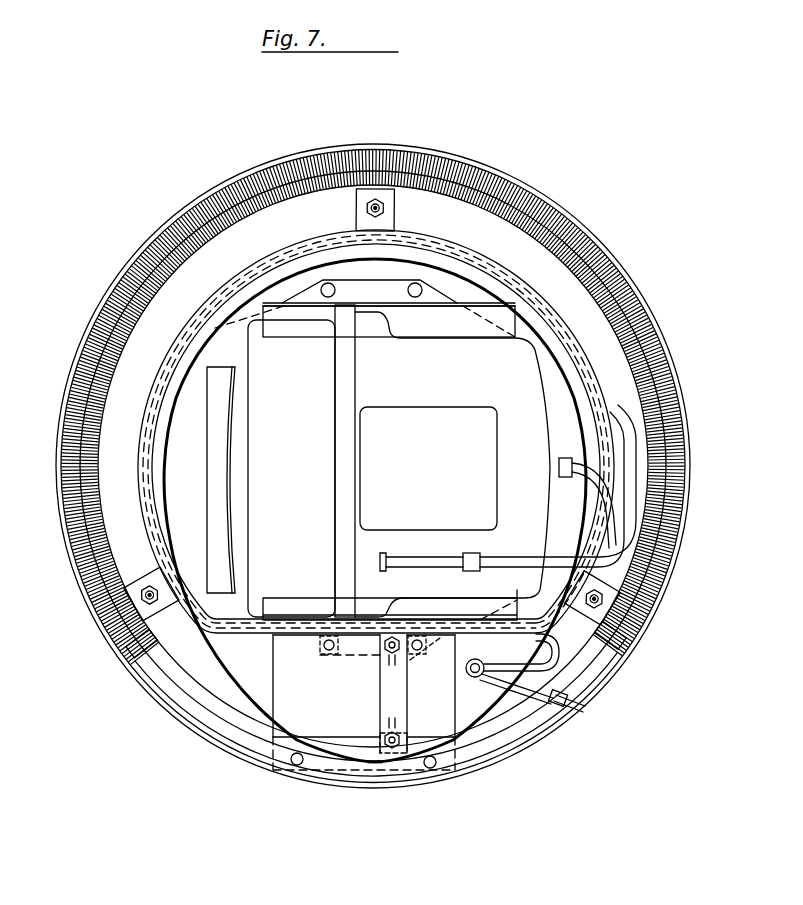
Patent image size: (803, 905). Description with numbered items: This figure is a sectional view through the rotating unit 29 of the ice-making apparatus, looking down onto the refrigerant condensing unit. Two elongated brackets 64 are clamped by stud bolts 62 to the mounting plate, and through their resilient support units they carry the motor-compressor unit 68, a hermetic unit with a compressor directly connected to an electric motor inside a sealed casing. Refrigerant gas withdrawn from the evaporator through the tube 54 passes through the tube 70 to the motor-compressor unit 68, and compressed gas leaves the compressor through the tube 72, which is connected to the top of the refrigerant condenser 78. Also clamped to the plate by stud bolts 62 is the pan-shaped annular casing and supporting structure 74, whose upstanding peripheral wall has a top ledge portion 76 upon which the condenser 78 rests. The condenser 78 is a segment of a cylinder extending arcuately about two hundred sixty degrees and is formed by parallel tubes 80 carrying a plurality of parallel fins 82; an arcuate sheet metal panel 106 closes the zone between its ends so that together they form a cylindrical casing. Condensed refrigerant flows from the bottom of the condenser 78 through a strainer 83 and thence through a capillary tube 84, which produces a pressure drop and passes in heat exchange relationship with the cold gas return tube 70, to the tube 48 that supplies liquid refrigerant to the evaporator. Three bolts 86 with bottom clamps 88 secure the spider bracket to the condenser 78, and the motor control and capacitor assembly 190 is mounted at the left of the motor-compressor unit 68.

The rotating unit 29 is at (205, 775).
The tube 48 is at (594, 513).
The tube 54 is at (559, 460).
The stud bolts 62 is at (345, 296).
The elongated brackets 64 is at (497, 304).
The motor-compressor unit 68 is at (306, 463).
The tube 70 is at (247, 262).
The tube 72 is at (213, 340).
The annular casing and supporting structure 74 is at (598, 708).
The top ledge portion 76 is at (207, 713).
The refrigerant condenser 78 is at (240, 166).
The parallel tubes 80 is at (600, 256).
The parallel fins 82 is at (97, 470).
The strainer 83 is at (466, 673).
The capillary tube 84 is at (207, 330).
The bolts 86 is at (361, 208).
The bottom clamps 88 is at (394, 208).
The arcuate sheet metal panel 106 is at (473, 767).
The motor control and capacitor assembly 190 is at (283, 677).